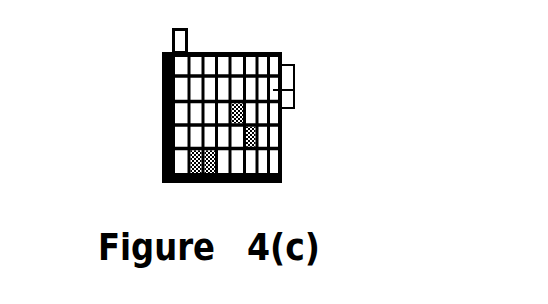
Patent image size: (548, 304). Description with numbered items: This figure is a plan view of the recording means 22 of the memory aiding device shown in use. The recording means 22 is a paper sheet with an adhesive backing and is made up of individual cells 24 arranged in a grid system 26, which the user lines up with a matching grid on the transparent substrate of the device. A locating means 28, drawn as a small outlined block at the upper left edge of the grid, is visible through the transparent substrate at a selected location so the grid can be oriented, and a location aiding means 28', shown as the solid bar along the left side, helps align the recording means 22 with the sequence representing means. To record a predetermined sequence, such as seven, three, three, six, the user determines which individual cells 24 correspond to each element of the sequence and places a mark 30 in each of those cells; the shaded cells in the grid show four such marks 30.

The recording means 22 is at (284, 36).
The individual cells 24 is at (296, 88).
The grid system 26 is at (228, 52).
The locating means 28 is at (134, 43).
The location aiding means 28' is at (120, 117).
The mark 30 is at (162, 163).